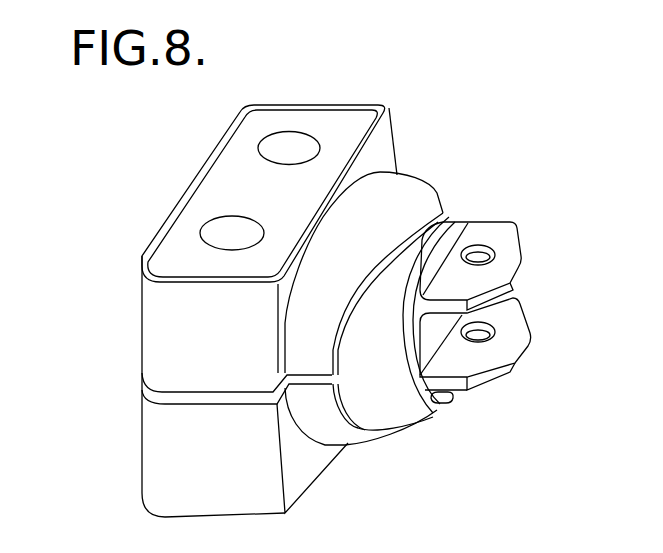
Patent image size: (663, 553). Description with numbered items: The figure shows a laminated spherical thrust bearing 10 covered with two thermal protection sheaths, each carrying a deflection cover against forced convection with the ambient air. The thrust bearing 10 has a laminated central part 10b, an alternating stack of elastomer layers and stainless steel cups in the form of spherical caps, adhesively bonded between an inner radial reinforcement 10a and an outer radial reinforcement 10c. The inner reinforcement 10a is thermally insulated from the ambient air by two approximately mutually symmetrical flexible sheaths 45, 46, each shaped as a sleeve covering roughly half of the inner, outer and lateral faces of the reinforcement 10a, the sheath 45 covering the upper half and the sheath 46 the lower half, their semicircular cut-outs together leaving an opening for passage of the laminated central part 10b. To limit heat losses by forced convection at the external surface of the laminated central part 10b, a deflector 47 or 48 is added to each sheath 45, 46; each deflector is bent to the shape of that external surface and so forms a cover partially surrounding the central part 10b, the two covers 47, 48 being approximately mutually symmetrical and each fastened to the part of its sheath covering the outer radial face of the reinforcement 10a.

The laminated spherical thrust bearing 10 is at (462, 208).
The inner radial reinforcement 10a is at (328, 128).
The laminated central part 10b is at (387, 382).
The outer radial reinforcement 10c is at (503, 250).
The flexible sheath 45 is at (132, 280).
The flexible sheath 46 is at (135, 440).
The deflector 47 is at (387, 213).
The deflector 48 is at (340, 428).